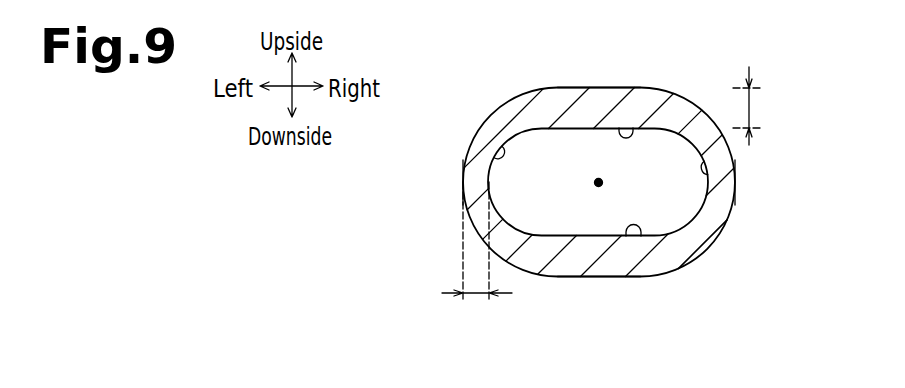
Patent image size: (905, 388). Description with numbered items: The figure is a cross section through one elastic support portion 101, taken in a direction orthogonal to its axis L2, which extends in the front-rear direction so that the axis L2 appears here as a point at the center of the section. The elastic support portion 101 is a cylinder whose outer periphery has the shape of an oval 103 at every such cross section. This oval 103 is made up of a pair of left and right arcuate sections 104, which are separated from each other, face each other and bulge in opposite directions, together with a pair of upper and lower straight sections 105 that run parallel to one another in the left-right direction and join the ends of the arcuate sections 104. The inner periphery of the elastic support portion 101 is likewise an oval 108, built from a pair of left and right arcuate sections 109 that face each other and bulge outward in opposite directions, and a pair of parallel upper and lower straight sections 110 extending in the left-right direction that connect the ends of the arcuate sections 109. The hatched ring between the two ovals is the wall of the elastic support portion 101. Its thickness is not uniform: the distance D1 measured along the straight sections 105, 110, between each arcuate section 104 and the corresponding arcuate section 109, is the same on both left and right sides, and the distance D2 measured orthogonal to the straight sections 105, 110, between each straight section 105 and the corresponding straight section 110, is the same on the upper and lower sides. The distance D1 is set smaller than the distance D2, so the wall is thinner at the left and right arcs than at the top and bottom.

The elastic support portion 101 is at (677, 26).
The oval 103 is at (722, 222).
The arcuate sections 104 is at (463, 188).
The straight sections 105 is at (575, 88).
The oval 108 is at (704, 250).
The arcuate sections 109 is at (495, 154).
The straight sections 110 is at (621, 127).
The axis L2 is at (603, 182).
The distance D1 is at (476, 295).
The distance D2 is at (752, 107).